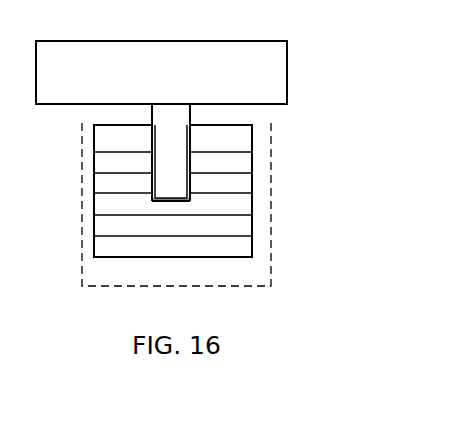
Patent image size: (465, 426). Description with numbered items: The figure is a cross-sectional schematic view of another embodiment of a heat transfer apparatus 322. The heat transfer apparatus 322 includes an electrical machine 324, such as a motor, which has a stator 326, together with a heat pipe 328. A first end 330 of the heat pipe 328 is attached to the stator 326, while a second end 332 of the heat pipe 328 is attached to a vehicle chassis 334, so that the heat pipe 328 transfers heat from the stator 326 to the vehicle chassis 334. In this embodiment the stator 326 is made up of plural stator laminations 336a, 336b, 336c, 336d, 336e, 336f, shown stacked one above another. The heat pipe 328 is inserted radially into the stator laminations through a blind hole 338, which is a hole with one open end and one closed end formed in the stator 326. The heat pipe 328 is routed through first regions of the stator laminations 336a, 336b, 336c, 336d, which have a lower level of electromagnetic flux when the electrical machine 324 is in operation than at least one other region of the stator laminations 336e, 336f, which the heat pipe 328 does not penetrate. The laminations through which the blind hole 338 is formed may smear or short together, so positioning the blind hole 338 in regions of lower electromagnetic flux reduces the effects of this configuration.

The heat transfer apparatus 322 is at (62, 180).
The electrical machine 324 is at (106, 287).
The stator 326 is at (212, 248).
The heat pipe 328 is at (178, 117).
The first end 330 is at (171, 201).
The second end 332 is at (170, 103).
The vehicle chassis 334 is at (218, 40).
The stator lamination 336a is at (246, 142).
The stator lamination 336b is at (247, 163).
The stator lamination 336c is at (242, 182).
The stator lamination 336d is at (238, 203).
The stator lamination 336e is at (240, 225).
The stator lamination 336f is at (245, 248).
The blind hole 338 is at (152, 140).